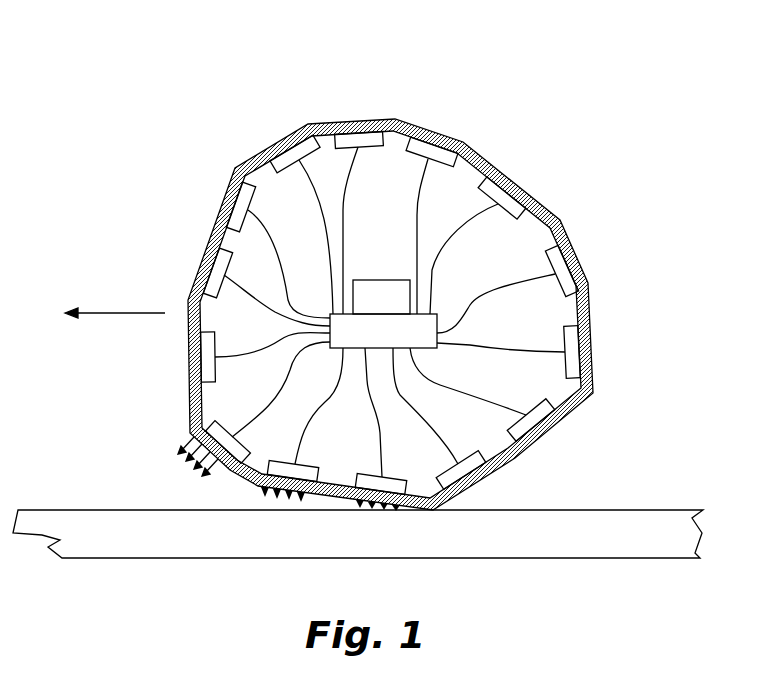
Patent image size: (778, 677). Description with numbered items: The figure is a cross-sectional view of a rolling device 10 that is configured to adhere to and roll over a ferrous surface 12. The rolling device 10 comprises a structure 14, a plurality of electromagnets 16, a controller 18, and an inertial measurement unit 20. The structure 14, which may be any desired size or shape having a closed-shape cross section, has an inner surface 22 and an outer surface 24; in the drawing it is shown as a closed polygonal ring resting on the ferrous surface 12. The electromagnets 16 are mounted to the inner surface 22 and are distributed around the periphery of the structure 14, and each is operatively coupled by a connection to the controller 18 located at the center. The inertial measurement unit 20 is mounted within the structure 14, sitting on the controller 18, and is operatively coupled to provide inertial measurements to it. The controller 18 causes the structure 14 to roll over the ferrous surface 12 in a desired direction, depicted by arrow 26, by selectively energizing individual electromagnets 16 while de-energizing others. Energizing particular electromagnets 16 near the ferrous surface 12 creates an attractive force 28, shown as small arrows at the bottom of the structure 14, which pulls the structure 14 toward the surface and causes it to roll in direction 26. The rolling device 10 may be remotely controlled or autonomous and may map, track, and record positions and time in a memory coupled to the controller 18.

The rolling device 10 is at (148, 73).
The ferrous surface 12 is at (638, 510).
The structure 14 is at (580, 233).
The electromagnets 16 is at (362, 473).
The controller 18 is at (428, 349).
The inertial measurement unit 20 is at (373, 280).
The inner surface 22 is at (472, 172).
The outer surface 24 is at (503, 162).
The desired direction 26 is at (110, 312).
The attractive force 28 is at (196, 440).